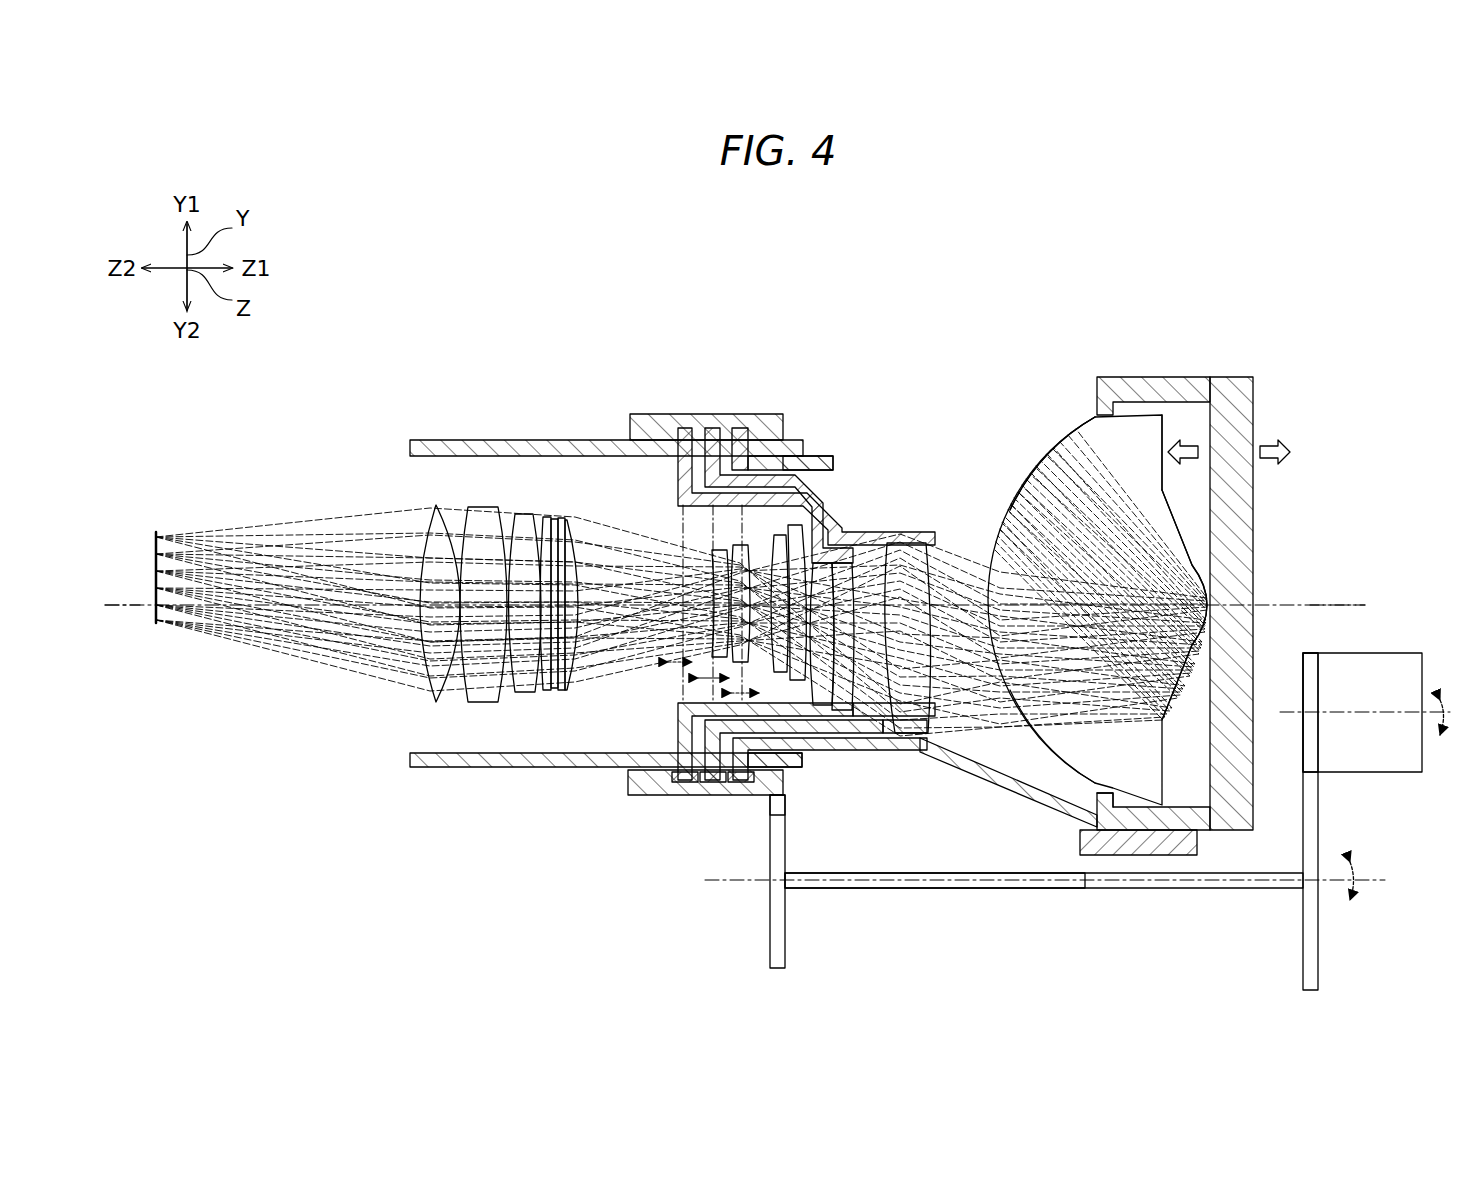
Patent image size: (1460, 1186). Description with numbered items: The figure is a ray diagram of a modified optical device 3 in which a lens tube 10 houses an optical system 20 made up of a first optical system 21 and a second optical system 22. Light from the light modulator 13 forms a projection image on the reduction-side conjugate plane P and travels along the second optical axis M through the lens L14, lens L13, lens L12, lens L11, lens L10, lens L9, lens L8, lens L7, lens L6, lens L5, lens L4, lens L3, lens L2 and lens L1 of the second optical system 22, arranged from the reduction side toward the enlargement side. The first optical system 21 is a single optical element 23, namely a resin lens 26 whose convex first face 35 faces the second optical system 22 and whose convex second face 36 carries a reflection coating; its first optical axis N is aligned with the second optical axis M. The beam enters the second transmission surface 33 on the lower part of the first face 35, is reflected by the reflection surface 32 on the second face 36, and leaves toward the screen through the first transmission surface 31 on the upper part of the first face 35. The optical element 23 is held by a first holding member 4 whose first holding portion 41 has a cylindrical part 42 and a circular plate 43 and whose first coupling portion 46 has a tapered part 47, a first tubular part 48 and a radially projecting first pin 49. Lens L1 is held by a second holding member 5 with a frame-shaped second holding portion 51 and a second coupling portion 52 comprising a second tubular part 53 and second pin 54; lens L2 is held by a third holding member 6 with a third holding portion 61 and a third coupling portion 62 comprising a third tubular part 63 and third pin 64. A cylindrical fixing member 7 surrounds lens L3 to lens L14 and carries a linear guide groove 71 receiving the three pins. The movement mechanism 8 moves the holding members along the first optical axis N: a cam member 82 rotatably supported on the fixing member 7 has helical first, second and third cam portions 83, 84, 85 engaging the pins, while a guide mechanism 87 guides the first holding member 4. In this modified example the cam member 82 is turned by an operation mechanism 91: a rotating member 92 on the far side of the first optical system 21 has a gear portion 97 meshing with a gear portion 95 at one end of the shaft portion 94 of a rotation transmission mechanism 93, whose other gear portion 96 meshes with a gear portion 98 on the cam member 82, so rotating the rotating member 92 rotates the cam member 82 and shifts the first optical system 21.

The optical device 3 is at (1148, 520).
The first holding member 4 is at (922, 786).
The second holding member 5 is at (782, 381).
The third holding member 6 is at (771, 427).
The fixing member 7 is at (606, 556).
The movement mechanism 8 is at (918, 821).
The lens tube 10 is at (630, 523).
The light modulator 13 is at (156, 575).
The optical system 20 is at (606, 592).
The first optical system 21 is at (1167, 413).
The second optical system 22 is at (493, 476).
The optical element 23 is at (1073, 416).
The lens 26 is at (1092, 438).
The first transmission surface 31 is at (1144, 591).
The reflection surface 32 is at (1212, 614).
The second transmission surface 33 is at (1005, 735).
The first face 35 is at (1058, 760).
The second face 36 is at (1183, 535).
The first holding portion 41 is at (1206, 551).
The cylindrical part 42 is at (1218, 378).
The circular plate 43 is at (1256, 395).
The first coupling portion 46 is at (922, 786).
The tapered part 47 is at (1008, 787).
The first tubular part 48 is at (888, 740).
The first pin 49 is at (795, 752).
The second holding portion 51 is at (832, 455).
The second coupling portion 52 is at (781, 396).
The second tubular part 53 is at (768, 455).
The second pin 54 is at (738, 428).
The third holding portion 61 is at (626, 432).
The third coupling portion 62 is at (786, 443).
The third tubular part 63 is at (663, 428).
The third pin 64 is at (768, 459).
The guide groove 71 is at (622, 762).
The cam member 82 is at (636, 783).
The first cam portion 83 is at (742, 783).
The second cam portion 84 is at (712, 783).
The third cam portion 85 is at (683, 783).
The guide mechanism 87 is at (1165, 856).
The operation mechanism 91 is at (1080, 821).
The rotating member 92 is at (1410, 758).
The rotation transmission mechanism 93 is at (1110, 890).
The shaft portion 94 is at (1070, 890).
The gear portion 95 is at (1312, 960).
The gear portion 96 is at (770, 945).
The gear portion 97 is at (1310, 755).
The gear portion 98 is at (768, 800).
The lens L1 is at (905, 546).
The lens L2 is at (863, 530).
The lens L3 is at (825, 708).
The lens L4 is at (798, 684).
The lens L5 is at (773, 534).
The lens L6 is at (735, 544).
The lens L7 is at (713, 548).
The lens L8 is at (572, 690).
The lens L9 is at (561, 690).
The lens L10 is at (554, 689).
The lens L11 is at (546, 690).
The lens L12 is at (516, 692).
The lens L13 is at (468, 698).
The lens L14 is at (430, 690).
The reduction-side conjugate plane P is at (156, 532).
The second optical axis M is at (132, 604).
The first optical axis N is at (1312, 603).